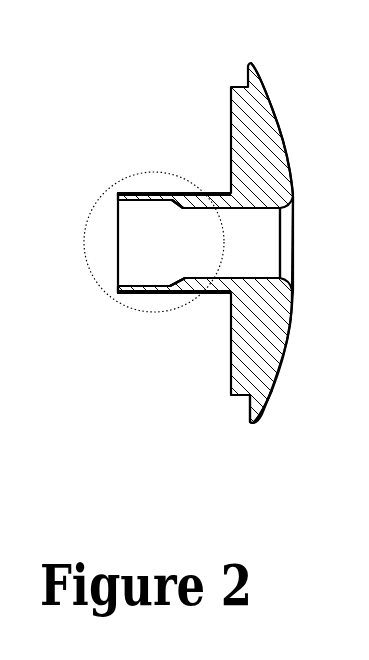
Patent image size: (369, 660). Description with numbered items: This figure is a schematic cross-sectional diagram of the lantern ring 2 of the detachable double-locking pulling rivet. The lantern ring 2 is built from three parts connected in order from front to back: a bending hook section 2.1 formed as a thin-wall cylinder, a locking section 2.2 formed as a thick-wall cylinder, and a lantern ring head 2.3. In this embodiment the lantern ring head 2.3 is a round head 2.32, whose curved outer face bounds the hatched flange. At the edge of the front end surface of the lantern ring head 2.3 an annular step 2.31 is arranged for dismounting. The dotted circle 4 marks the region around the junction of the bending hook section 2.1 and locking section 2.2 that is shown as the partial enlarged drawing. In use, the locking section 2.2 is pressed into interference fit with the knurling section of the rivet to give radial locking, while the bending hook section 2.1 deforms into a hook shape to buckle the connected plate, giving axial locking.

The lantern ring 2 is at (193, 70).
The bending hook section 2.1 is at (131, 193).
The locking section 2.2 is at (216, 200).
The lantern ring head 2.3 is at (261, 109).
The annular step 2.31 is at (250, 414).
The round head 2.32 is at (277, 153).
The partial enlarged drawing region A 4 is at (90, 274).